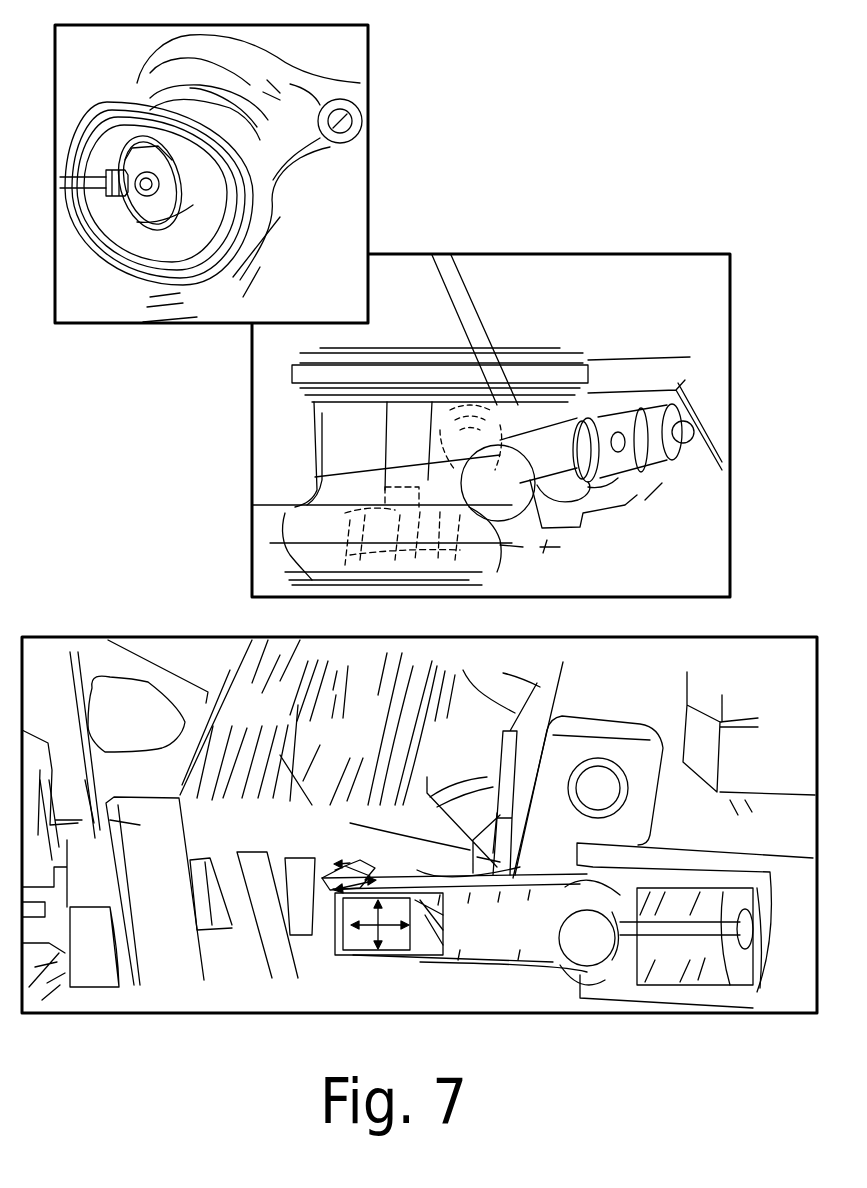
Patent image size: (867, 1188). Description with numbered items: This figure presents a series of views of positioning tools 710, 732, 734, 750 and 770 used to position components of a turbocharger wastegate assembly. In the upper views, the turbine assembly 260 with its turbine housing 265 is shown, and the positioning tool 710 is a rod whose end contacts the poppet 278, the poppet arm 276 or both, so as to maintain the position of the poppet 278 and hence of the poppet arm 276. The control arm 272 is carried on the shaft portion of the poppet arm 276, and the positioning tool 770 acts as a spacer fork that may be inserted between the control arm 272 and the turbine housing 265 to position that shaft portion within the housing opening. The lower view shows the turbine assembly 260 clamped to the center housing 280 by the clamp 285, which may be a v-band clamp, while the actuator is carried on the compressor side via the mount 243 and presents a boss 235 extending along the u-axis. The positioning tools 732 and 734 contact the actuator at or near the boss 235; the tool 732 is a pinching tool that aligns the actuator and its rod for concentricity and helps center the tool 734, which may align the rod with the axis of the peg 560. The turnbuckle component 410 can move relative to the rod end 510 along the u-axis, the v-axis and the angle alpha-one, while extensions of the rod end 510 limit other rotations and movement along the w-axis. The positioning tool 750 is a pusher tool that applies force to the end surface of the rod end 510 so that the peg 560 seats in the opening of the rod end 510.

The boss 235 is at (90, 870).
The mount 243 is at (67, 713).
The turbine assembly 260 is at (288, 55).
The turbine housing 265 is at (288, 216).
The control arm 272 is at (613, 422).
The poppet arm 276 is at (627, 420).
The poppet 278 is at (136, 226).
The center housing 280 is at (277, 716).
The clamp 285 is at (368, 750).
The turnbuckle component 410 is at (395, 947).
The rod end 510 is at (662, 483).
The peg 560 is at (577, 955).
The positioning tool 710 is at (72, 232).
The positioning tool 732 is at (185, 842).
The positioning tool 734 is at (272, 855).
The positioning tool 750 is at (663, 858).
The positioning tool 770 is at (673, 683).